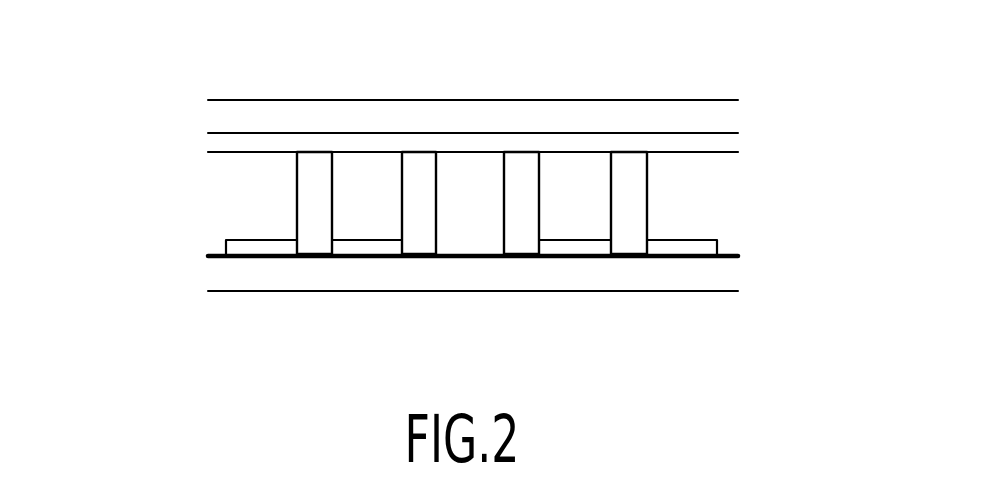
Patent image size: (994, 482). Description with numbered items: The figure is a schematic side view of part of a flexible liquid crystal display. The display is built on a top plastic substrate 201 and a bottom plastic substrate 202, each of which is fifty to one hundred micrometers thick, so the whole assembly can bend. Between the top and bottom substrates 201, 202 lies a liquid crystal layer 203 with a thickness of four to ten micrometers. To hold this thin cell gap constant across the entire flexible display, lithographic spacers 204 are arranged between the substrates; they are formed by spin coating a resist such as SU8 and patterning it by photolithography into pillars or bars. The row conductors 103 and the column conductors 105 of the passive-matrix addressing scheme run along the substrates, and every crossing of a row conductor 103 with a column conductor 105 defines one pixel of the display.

The row conductors 103 is at (243, 240).
The column conductors 105 is at (212, 143).
The top plastic substrate 201 is at (736, 113).
The bottom plastic substrate 202 is at (736, 275).
The liquid crystal layer 203 is at (255, 193).
The lithographic spacers 204 is at (626, 238).